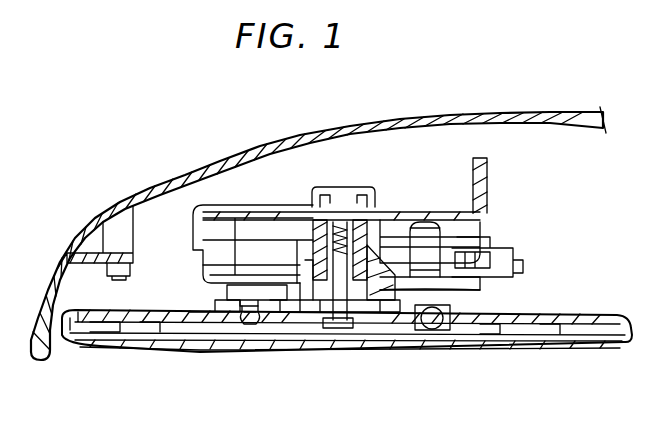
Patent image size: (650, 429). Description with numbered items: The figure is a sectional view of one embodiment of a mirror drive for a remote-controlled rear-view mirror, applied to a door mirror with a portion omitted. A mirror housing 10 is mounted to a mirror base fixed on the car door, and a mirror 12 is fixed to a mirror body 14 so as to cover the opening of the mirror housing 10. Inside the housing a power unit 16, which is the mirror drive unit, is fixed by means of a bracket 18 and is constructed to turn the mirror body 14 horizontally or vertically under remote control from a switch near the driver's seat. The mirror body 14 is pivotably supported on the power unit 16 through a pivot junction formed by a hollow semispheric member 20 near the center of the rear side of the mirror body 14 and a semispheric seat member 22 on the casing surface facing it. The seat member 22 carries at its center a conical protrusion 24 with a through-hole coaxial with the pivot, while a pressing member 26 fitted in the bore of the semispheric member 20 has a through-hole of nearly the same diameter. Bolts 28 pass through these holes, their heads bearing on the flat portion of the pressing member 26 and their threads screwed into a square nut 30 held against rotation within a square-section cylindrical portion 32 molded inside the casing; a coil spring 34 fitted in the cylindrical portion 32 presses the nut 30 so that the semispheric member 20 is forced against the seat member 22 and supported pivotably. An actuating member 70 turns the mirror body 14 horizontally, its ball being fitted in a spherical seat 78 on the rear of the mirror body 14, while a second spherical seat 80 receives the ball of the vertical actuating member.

The mirror housing 10 is at (212, 160).
The mirror 12 is at (503, 350).
The mirror body 14 is at (562, 350).
The power unit 16 is at (190, 283).
The bracket 18 is at (195, 233).
The semispheric member 20 is at (355, 308).
The seat member 22 is at (283, 340).
The conical protrusion 24 is at (335, 330).
The pressing member 26 is at (367, 340).
The bolts 28 is at (352, 340).
The square nut 30 is at (353, 187).
The cylindrical portion 32 is at (380, 255).
The coil spring 34 is at (395, 225).
The actuating member 70 is at (257, 345).
The spherical seat 78 is at (235, 342).
The spherical seat 80 is at (447, 350).